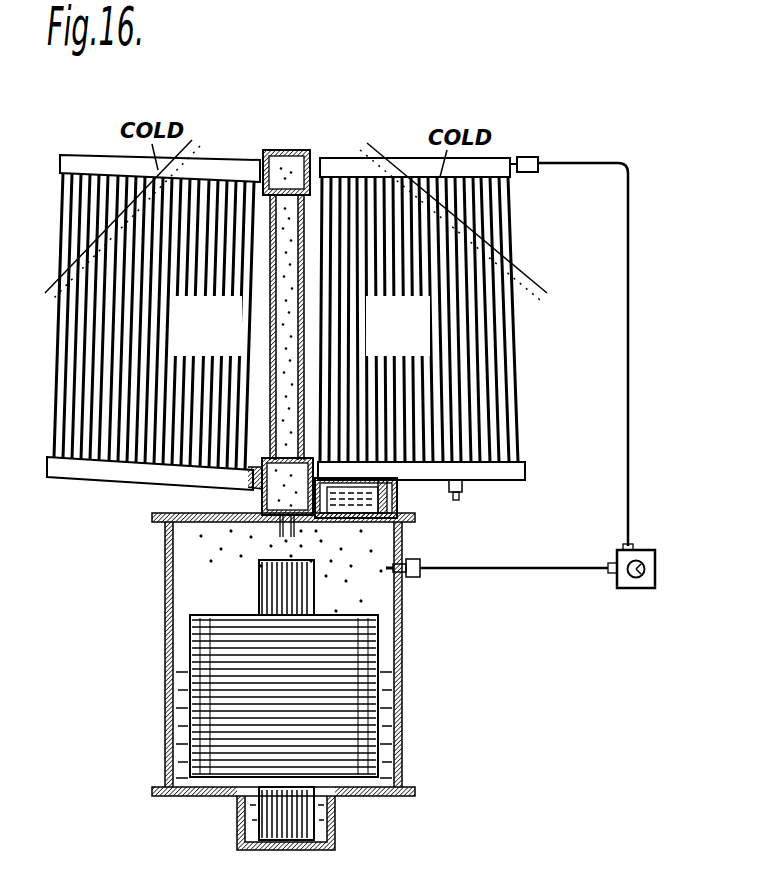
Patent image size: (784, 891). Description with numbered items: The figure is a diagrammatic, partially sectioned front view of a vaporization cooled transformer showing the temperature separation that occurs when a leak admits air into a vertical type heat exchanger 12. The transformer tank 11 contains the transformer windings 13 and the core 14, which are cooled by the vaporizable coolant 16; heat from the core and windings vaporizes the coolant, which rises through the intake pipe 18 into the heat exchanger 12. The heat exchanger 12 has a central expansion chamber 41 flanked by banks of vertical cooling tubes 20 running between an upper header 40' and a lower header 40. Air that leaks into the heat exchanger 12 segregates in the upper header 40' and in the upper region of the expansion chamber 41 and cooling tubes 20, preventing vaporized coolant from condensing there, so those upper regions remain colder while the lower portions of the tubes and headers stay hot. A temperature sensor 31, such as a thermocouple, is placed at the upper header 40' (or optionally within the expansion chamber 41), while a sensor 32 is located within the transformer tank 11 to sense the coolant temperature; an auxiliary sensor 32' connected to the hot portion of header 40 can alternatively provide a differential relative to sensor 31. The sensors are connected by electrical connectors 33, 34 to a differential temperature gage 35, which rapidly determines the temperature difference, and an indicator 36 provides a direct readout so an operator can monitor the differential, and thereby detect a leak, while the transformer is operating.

The transformer tank 11 is at (432, 718).
The heat exchanger 12 is at (558, 368).
The transformer windings 13 is at (360, 664).
The core 14 is at (314, 590).
The vaporizable coolant 16 is at (175, 722).
The intake pipe 18 is at (280, 535).
The cooling tubes 20 is at (521, 422).
The temperature sensor 31 is at (535, 173).
The sensor 32 is at (425, 585).
The auxiliary sensor 32' is at (489, 501).
The electrical connector 33 is at (631, 331).
The electrical connector 34 is at (535, 571).
The differential temperature gage 35 is at (636, 589).
The indicator 36 is at (657, 568).
The header 40 is at (450, 482).
The upper header 40' is at (415, 130).
The expansion chamber 41 is at (292, 222).